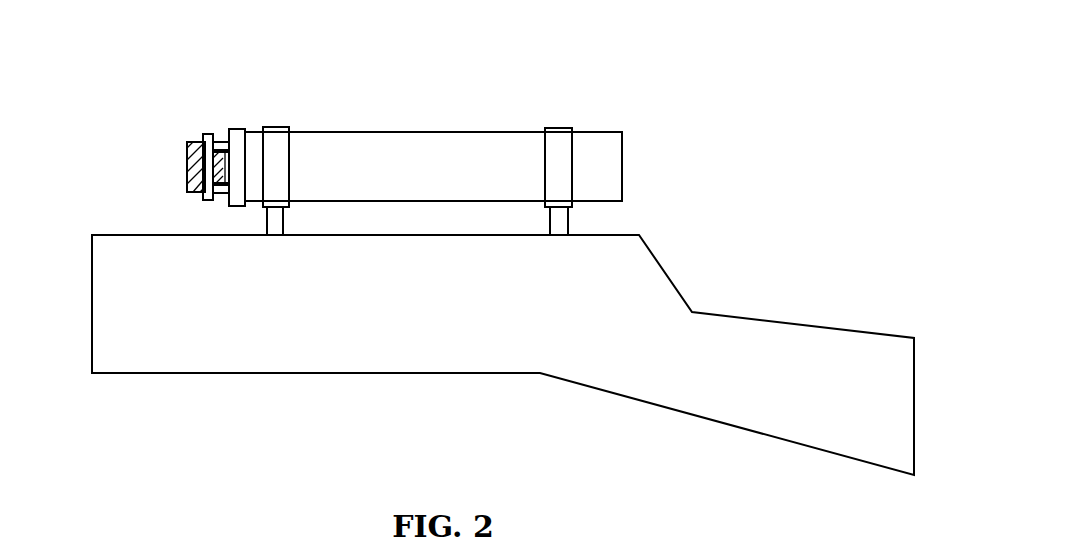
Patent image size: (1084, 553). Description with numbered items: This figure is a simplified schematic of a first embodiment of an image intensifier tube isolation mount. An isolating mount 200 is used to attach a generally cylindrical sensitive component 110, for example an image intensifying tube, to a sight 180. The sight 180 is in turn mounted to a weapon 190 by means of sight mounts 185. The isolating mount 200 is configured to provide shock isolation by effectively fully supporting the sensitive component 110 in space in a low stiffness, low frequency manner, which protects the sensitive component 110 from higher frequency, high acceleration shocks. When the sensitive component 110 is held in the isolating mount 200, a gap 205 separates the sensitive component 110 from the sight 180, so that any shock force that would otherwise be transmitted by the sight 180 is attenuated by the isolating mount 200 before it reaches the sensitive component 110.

The sensitive component 110 is at (197, 185).
The sight 180 is at (408, 176).
The sight mounts 185 is at (280, 137).
The weapon 190 is at (520, 366).
The isolating mount 200 is at (206, 133).
The gap 205 is at (224, 114).